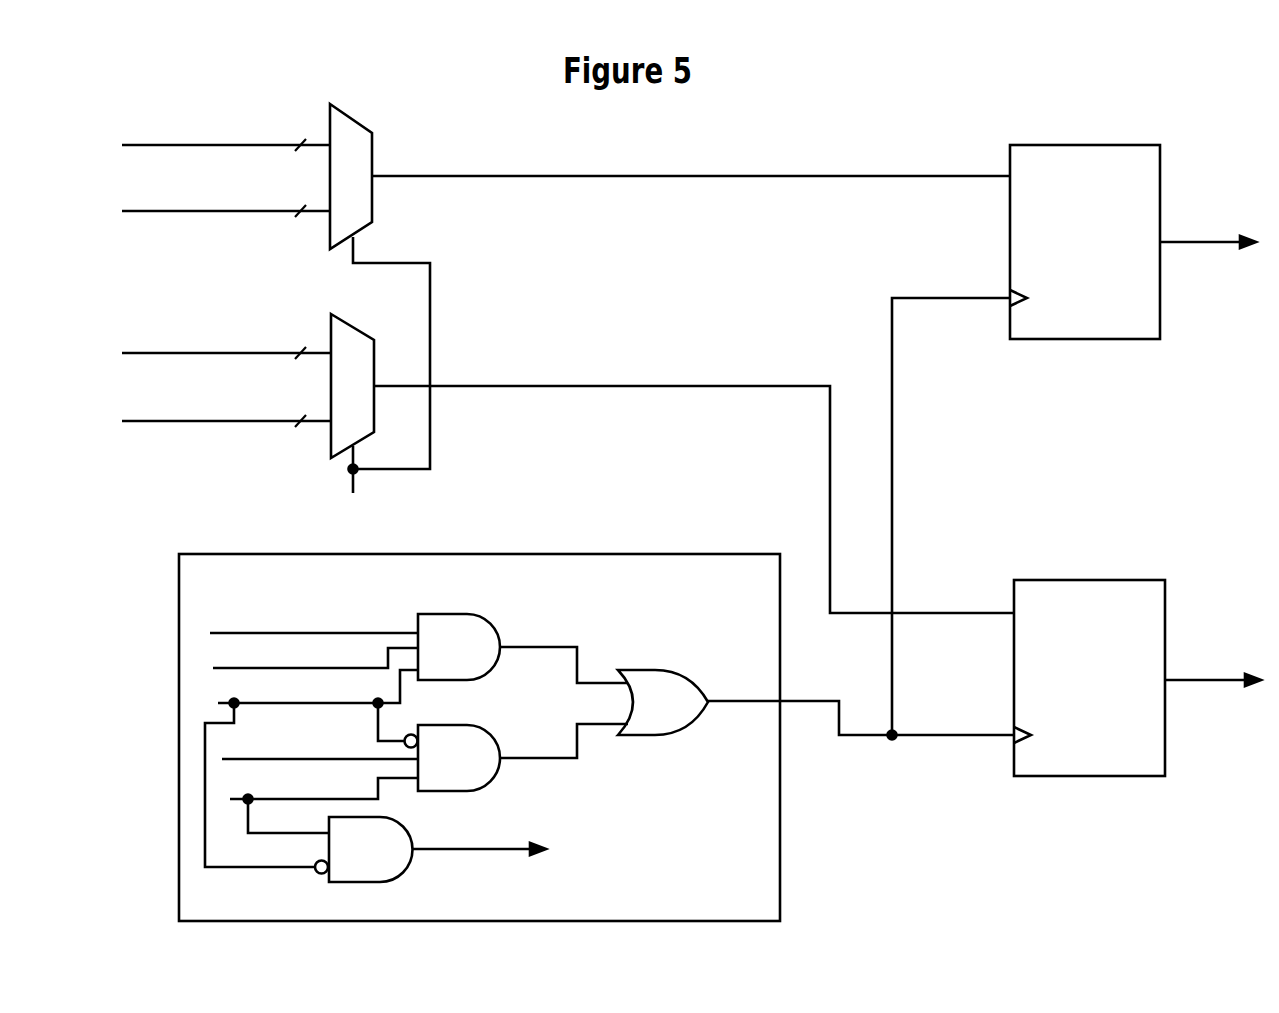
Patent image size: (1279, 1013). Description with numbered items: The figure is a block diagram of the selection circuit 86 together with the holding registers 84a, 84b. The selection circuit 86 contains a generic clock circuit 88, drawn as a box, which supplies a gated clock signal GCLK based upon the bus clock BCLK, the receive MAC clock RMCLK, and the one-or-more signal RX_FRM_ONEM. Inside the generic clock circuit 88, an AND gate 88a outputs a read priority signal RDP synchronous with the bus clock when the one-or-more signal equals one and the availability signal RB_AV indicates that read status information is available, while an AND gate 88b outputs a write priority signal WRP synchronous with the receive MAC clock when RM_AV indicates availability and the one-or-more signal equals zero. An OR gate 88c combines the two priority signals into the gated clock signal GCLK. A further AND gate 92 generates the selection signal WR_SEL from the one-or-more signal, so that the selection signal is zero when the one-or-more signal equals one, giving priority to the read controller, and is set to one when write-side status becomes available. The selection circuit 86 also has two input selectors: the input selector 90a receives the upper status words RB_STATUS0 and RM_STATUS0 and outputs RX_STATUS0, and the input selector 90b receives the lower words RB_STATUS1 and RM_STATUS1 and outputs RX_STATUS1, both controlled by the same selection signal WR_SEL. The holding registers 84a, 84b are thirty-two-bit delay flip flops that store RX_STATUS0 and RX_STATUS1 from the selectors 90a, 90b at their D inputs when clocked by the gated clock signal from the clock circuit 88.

The selection circuit 86 is at (691, 121).
The input selector 90a is at (367, 132).
The input selector 90b is at (368, 343).
The holding register 84a is at (1087, 332).
The holding register 84b is at (1112, 773).
The generic clock circuit 88 is at (596, 737).
The AND gate 88a is at (468, 619).
The AND gate 88b is at (470, 781).
The OR gate 88c is at (672, 676).
The AND gate 92 is at (385, 872).